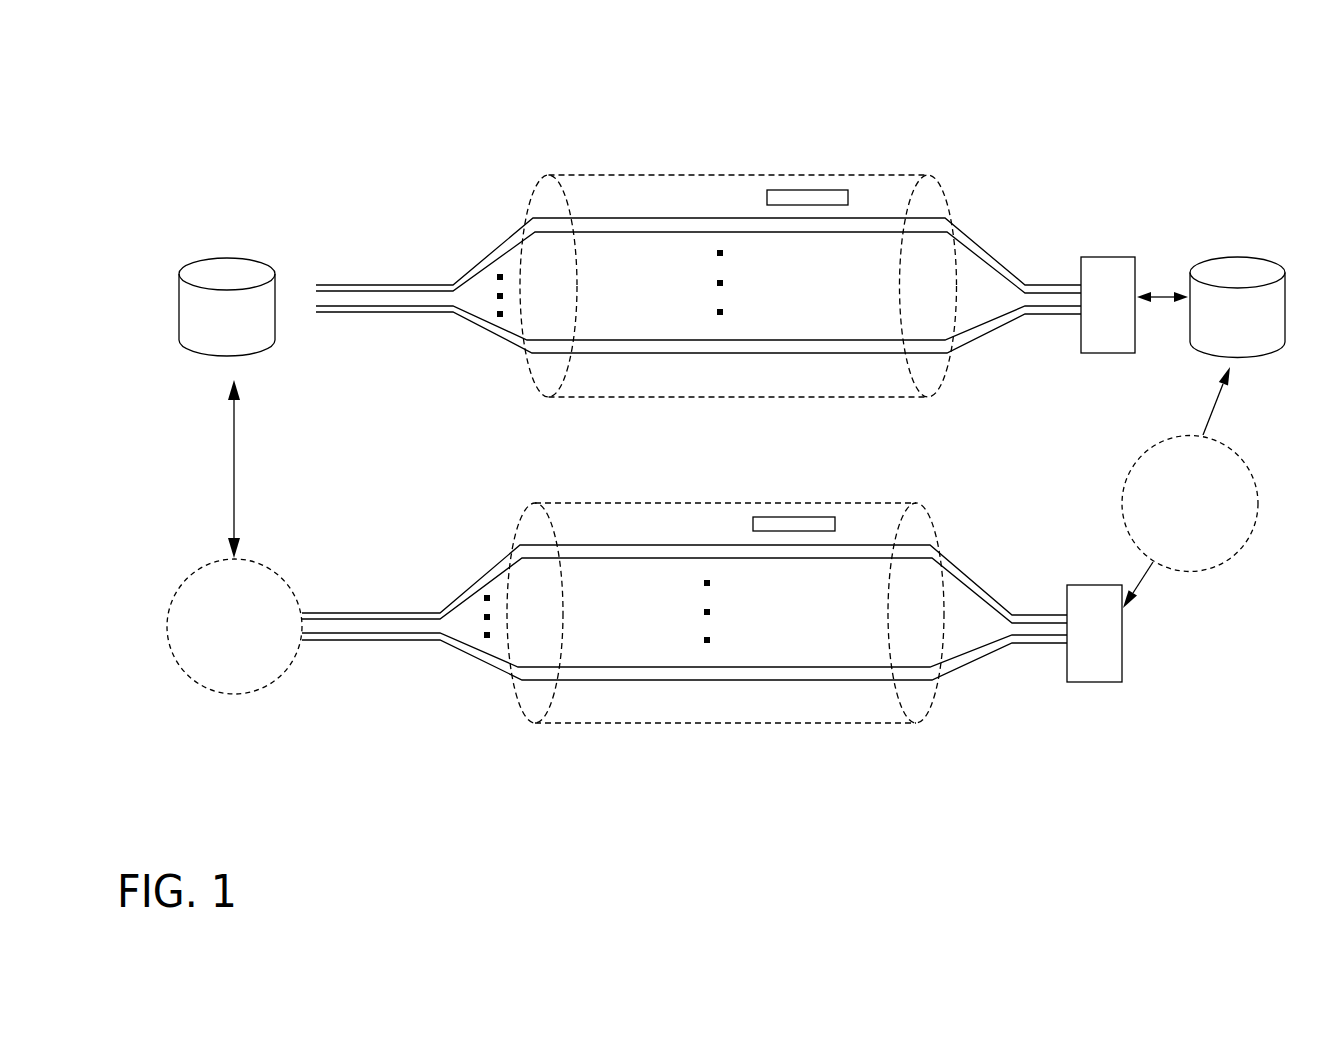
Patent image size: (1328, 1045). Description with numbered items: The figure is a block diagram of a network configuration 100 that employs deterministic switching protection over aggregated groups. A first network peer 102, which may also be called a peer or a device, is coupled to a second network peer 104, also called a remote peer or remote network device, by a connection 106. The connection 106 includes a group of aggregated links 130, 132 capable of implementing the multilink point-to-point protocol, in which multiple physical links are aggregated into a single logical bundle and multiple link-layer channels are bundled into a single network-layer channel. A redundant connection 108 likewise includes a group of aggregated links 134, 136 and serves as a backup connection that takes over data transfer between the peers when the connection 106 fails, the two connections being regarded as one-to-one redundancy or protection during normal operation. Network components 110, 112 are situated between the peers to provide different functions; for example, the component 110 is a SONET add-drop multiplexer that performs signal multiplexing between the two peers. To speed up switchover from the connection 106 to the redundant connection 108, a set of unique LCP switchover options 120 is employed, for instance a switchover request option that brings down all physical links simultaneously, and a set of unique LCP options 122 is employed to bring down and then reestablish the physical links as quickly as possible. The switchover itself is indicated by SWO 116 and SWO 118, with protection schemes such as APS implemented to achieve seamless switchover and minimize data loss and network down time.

The network configuration 100 is at (1232, 127).
The first network peer 102 is at (246, 324).
The second network peer 104 is at (1256, 324).
The connection 106 is at (667, 175).
The redundant connection 108 is at (647, 503).
The component 110 is at (1127, 317).
The component 112 is at (1113, 644).
The switchover (SWO) 116 is at (170, 648).
The switchover (SWO) 118 is at (1122, 493).
The LCP switchover options 120 is at (822, 190).
The LCP options 122 is at (780, 517).
The aggregated link 130 is at (512, 237).
The aggregated link 132 is at (512, 347).
The aggregated link 134 is at (500, 560).
The aggregated link 136 is at (500, 675).